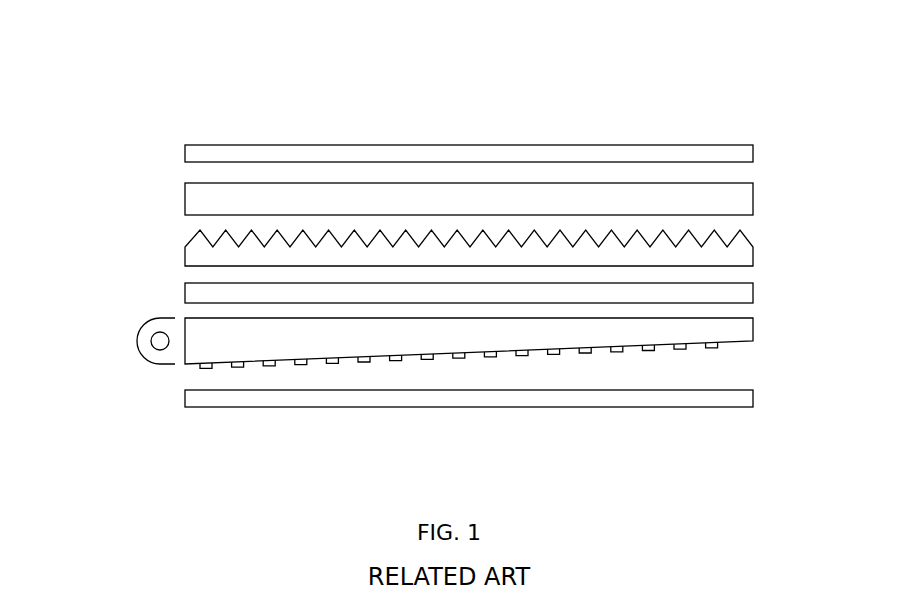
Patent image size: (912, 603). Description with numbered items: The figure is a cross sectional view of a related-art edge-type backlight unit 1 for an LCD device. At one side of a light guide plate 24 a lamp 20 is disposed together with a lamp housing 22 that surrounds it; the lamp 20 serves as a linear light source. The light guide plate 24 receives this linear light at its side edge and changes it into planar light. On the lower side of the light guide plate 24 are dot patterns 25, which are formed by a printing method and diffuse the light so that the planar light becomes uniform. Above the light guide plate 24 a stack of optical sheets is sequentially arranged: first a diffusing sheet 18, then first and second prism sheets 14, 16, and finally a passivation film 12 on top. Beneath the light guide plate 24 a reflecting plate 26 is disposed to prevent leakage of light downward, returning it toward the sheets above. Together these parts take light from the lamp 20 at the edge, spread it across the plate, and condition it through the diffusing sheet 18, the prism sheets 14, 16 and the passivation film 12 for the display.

The edge-type backlight unit 1 is at (631, 124).
The passivation film 12 is at (737, 148).
The first prism sheet 14 is at (743, 198).
The second prism sheet 16 is at (745, 250).
The diffusing sheet 18 is at (745, 295).
The lamp 20 is at (157, 346).
The lamp housing 22 is at (140, 328).
The light guide plate 24 is at (742, 333).
The dot patterns 25 is at (718, 347).
The reflecting plate 26 is at (740, 397).